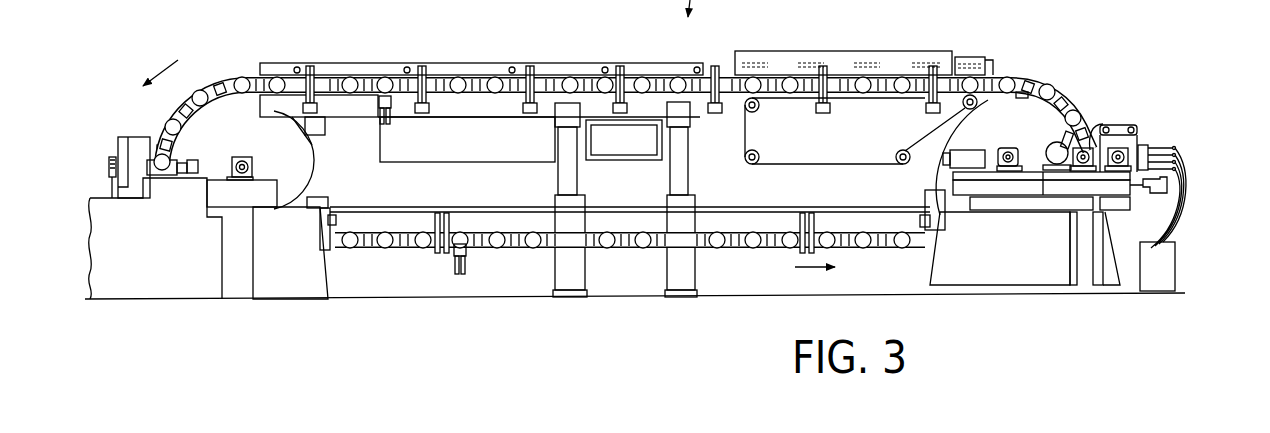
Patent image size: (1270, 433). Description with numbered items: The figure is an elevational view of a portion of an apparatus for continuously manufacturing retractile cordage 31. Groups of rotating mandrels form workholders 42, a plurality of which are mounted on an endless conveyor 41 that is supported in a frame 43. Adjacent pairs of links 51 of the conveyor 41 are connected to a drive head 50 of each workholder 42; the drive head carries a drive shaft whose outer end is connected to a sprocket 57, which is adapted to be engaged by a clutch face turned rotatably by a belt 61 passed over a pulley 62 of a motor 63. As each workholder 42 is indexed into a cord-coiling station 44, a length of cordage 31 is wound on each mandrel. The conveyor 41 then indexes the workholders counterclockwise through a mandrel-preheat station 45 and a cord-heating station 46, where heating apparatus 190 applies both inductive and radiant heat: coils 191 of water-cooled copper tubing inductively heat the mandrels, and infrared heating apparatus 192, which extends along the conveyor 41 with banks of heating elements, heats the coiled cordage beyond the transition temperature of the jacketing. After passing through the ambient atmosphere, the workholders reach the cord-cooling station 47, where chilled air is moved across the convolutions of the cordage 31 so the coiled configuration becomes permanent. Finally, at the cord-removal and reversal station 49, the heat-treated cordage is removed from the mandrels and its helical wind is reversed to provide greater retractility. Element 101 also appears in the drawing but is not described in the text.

The retractile cordage 31 is at (1187, 198).
The endless conveyor 41 is at (997, 76).
The workholder 42 is at (1064, 94).
The frame 43 is at (667, 266).
The cord-coiling station 44 is at (1147, 122).
The mandrel-preheat station 45 is at (976, 57).
The cord-heating station 46 is at (910, 48).
The cord-cooling station 47 is at (603, 61).
The cord-removal and reversal station 49 is at (133, 137).
The drive head 50 is at (1049, 99).
The links 51 is at (1022, 96).
The sprocket 57 is at (1079, 118).
The belt 61 is at (1111, 122).
The pulley 62 is at (1150, 142).
The motor 63 is at (1166, 126).
The terminal block 101 is at (1198, 149).
The heating apparatus 190 is at (962, 39).
The induction coils 191 is at (994, 62).
The infrared heating apparatus 192 is at (772, 51).